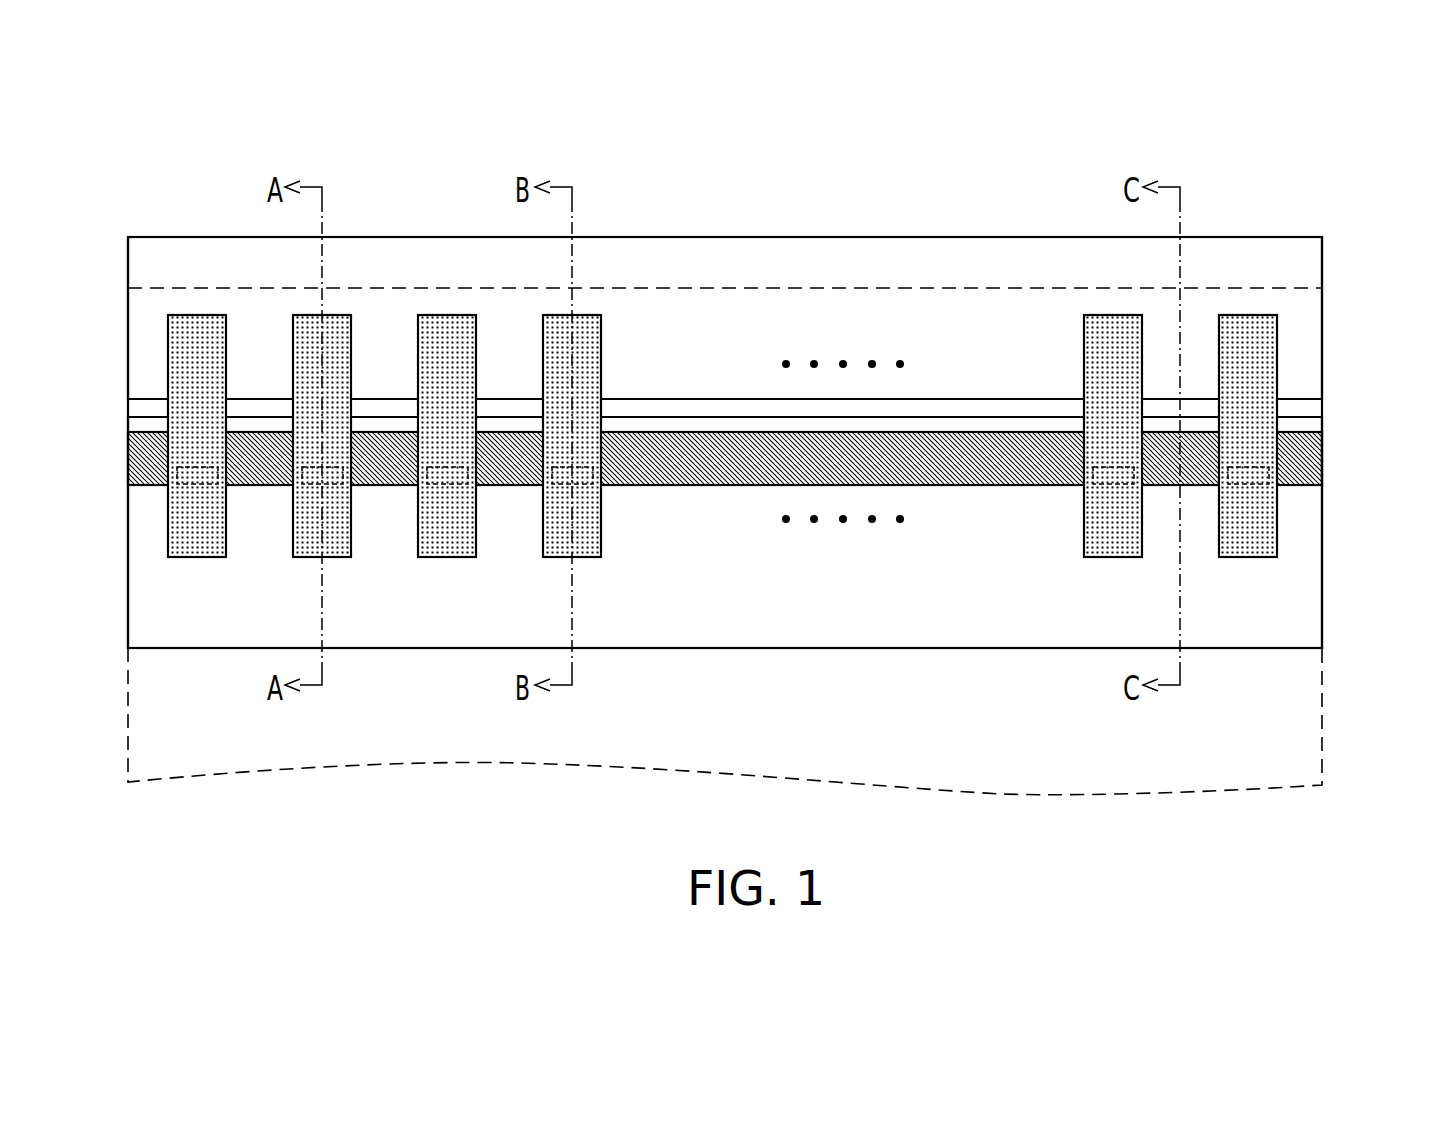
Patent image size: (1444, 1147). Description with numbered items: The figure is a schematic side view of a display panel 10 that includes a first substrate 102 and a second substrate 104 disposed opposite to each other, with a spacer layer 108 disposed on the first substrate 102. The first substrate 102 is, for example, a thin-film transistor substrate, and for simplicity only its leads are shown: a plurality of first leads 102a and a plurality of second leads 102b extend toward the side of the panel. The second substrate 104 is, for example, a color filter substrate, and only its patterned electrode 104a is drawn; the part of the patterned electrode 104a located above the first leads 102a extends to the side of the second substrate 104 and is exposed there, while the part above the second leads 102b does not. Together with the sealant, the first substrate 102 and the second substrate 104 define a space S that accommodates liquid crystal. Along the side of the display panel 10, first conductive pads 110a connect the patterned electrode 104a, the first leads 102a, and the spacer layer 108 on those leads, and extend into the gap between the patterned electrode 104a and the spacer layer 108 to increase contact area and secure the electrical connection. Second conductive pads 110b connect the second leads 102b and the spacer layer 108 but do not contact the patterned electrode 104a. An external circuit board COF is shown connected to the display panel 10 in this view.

The display panel 10 is at (1324, 190).
The first substrate 102 is at (1307, 562).
The first leads 102a is at (338, 485).
The second leads 102b is at (193, 485).
The second substrate 104 is at (1307, 317).
The patterned electrode 104a is at (1307, 407).
The spacer layer 108 is at (140, 458).
The first conductive pads 110a is at (338, 327).
The second conductive pads 110b is at (197, 327).
The space S is at (134, 424).
The external circuit board COF is at (1310, 760).